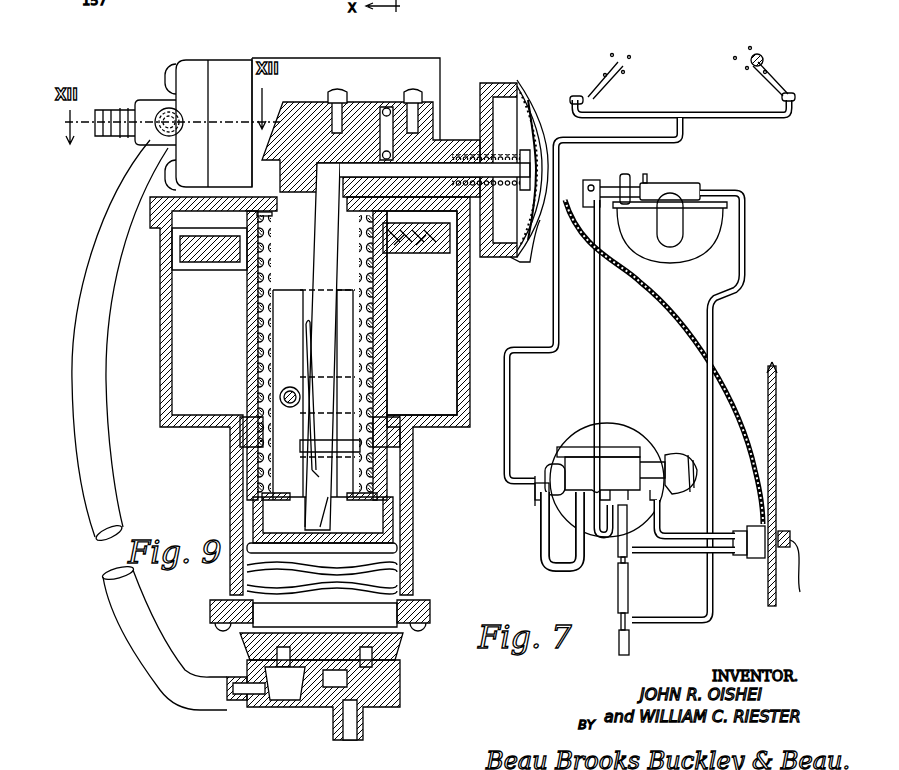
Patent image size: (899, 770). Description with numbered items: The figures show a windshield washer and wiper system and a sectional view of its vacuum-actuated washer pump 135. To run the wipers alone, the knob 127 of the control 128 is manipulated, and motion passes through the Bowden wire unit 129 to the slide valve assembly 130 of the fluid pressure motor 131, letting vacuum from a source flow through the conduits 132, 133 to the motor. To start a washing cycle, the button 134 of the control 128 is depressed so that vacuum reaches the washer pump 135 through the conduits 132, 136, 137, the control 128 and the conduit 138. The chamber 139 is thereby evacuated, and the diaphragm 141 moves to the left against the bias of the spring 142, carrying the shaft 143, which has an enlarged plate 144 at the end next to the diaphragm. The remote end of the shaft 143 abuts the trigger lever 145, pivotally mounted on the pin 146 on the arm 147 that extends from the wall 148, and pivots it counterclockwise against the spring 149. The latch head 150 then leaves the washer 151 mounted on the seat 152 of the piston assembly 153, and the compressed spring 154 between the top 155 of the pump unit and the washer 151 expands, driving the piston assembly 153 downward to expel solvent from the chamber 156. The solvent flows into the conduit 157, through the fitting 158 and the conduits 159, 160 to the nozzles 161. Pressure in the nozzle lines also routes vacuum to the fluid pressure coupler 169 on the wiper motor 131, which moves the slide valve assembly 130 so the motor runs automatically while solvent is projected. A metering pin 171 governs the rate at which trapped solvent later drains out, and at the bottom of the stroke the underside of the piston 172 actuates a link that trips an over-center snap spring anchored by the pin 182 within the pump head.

In FIG. 7, the knob 127 is at (778, 522).
In FIG. 7, the control 128 is at (760, 560).
In FIG. 7, the Bowden wire unit 129 is at (720, 372).
In FIG. 7, the slide valve assembly 130 is at (657, 183).
In FIG. 7, the fluid pressure motor 131 is at (700, 254).
In FIG. 7, the conduit 132 is at (632, 650).
In FIG. 7, the conduit 133 is at (704, 410).
In FIG. 7, the button 134 is at (808, 568).
In FIG. 9, the washer pump 135 is at (180, 437).
In FIG. 7, the washer pump 135 is at (626, 418).
In FIG. 7, the conduit 136 is at (629, 605).
In FIG. 7, the conduit 137 is at (678, 554).
In FIG. 7, the conduit 138 is at (663, 532).
In FIG. 9, the chamber 139 is at (515, 130).
In FIG. 9, the diaphragm 141 is at (523, 110).
In FIG. 9, the spring 142 is at (503, 190).
In FIG. 9, the shaft 143 is at (441, 168).
In FIG. 9, the enlarged plate 144 is at (537, 225).
In FIG. 9, the trigger lever 145 is at (335, 275).
In FIG. 9, the pin 146 is at (290, 386).
In FIG. 9, the arm 147 is at (343, 414).
In FIG. 9, the wall 148 is at (360, 472).
In FIG. 9, the spring 149 is at (309, 332).
In FIG. 9, the latch head 150 is at (303, 518).
In FIG. 9, the washer 151 is at (276, 492).
In FIG. 9, the seat 152 is at (375, 514).
In FIG. 9, the piston assembly 153 is at (400, 352).
In FIG. 9, the spring 154 is at (378, 298).
In FIG. 9, the top 155 is at (152, 192).
In FIG. 9, the chamber 156 is at (328, 623).
In FIG. 9, the conduit 157 is at (170, 690).
In FIG. 7, the conduit 157 is at (582, 576).
In FIG. 9, the fitting 158 is at (185, 122).
In FIG. 7, the fitting 158 is at (533, 493).
In FIG. 9, the conduit 159 is at (103, 133).
In FIG. 7, the conduit 159 is at (552, 341).
In FIG. 7, the conduit 160 is at (655, 113).
In FIG. 7, the nozzles 161 is at (586, 101).
In FIG. 7, the fluid pressure coupler 169 is at (598, 181).
In FIG. 9, the metering pin 171 is at (122, 117).
In FIG. 9, the piston 172 is at (417, 245).
In FIG. 9, the pin 182 is at (265, 222).